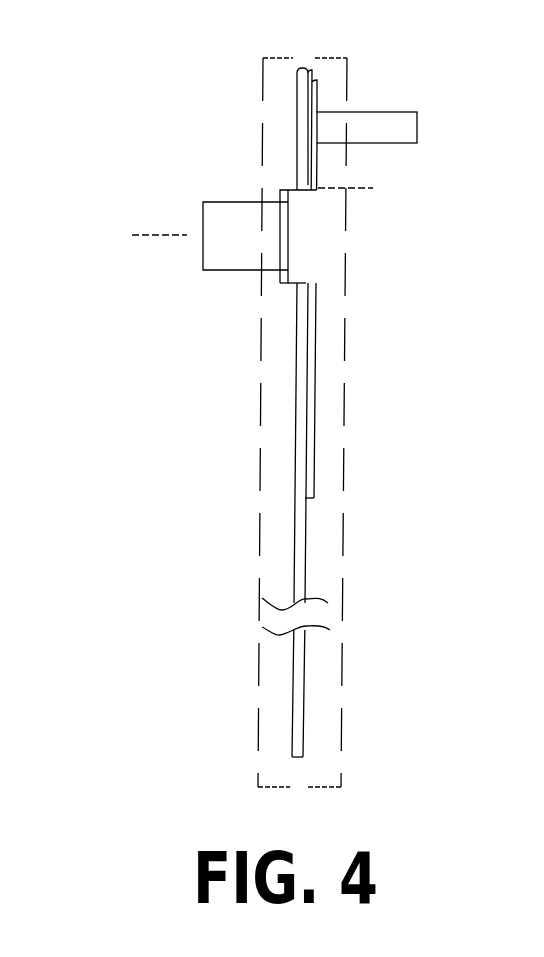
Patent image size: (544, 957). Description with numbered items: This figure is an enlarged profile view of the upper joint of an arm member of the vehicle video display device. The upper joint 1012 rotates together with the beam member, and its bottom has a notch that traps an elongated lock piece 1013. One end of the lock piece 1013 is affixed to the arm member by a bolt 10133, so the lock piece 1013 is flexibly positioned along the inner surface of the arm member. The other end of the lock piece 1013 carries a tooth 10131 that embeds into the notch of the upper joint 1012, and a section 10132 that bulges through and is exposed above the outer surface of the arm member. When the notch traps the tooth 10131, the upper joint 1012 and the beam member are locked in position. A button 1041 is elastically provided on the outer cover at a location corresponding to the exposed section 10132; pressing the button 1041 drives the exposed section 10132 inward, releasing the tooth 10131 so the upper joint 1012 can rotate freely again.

The upper joint 1012 is at (383, 127).
The lock piece 1013 is at (307, 370).
The tooth 10131 is at (312, 190).
The exposed section 10132 is at (303, 217).
The bolt 10133 is at (314, 452).
The button 1041 is at (238, 247).